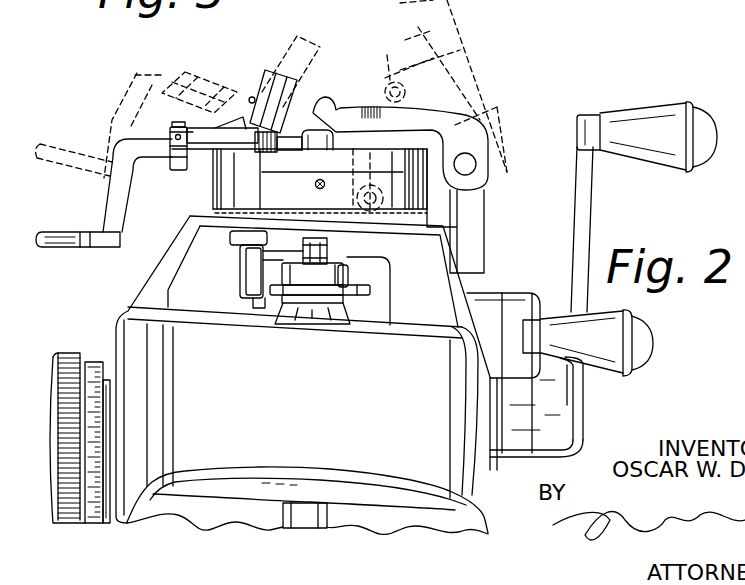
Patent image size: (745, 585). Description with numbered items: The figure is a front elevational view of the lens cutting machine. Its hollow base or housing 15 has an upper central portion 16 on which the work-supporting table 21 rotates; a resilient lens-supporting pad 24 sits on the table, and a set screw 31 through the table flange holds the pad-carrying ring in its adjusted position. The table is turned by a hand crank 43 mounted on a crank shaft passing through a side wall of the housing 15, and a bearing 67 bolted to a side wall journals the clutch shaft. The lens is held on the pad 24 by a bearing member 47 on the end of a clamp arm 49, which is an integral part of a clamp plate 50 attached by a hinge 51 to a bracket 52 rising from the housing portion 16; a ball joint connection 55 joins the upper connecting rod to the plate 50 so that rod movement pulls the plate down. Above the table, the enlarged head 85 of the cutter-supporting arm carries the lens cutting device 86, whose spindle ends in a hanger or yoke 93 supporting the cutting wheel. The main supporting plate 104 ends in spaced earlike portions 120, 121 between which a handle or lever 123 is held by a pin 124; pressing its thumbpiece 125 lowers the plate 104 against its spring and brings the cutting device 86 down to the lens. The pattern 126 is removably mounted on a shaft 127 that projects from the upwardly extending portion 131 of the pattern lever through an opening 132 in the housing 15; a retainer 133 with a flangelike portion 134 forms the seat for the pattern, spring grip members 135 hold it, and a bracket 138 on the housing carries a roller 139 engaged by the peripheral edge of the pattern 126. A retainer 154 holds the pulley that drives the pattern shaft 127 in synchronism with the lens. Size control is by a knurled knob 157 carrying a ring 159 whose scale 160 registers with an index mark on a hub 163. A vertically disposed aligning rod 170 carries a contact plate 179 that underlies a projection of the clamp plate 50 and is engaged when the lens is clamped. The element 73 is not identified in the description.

The housing 15 is at (125, 318).
The upper central portion of housing 16 is at (203, 228).
The work-supporting table 21 is at (208, 203).
The lens-supporting pad 24 is at (233, 164).
The set screw 31 is at (315, 185).
The hand crank 43 is at (657, 360).
The bearing member 47 is at (337, 145).
The clamp arm 49 is at (343, 110).
The clamp plate 50 is at (453, 132).
The hinge 51 is at (468, 161).
The bracket 52 is at (481, 218).
The ball joint connection 55 is at (388, 78).
The bearing 67 is at (513, 460).
The crank arm 73 is at (588, 225).
The head 85 is at (278, 72).
The lens cutting device 86 is at (252, 97).
The hanger or yoke 93 is at (299, 181).
The main supporting plate 104 is at (228, 128).
The earlike portion 120 is at (176, 127).
The earlike portion 121 is at (171, 167).
The handle or lever 123 is at (124, 146).
The pin 124 is at (173, 123).
The thumbpiece 125 is at (68, 249).
The pattern 126 is at (372, 291).
The shaft 127 is at (328, 242).
The portion of lever 131 is at (305, 322).
The opening 132 is at (372, 318).
The retainer 133 is at (346, 267).
The flangelike portion 134 is at (345, 303).
The spring grip members 135 is at (350, 277).
The bracket 138 is at (206, 302).
The roller 139 is at (262, 306).
The retainer 154 is at (327, 516).
The knurled knob 157 is at (58, 375).
The ring 159 is at (87, 353).
The scale 160 is at (97, 362).
The hub 163 is at (107, 361).
The aligning rod 170 is at (272, 148).
The contact plate 179 is at (300, 37).